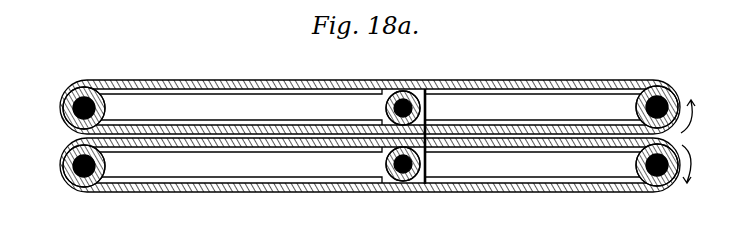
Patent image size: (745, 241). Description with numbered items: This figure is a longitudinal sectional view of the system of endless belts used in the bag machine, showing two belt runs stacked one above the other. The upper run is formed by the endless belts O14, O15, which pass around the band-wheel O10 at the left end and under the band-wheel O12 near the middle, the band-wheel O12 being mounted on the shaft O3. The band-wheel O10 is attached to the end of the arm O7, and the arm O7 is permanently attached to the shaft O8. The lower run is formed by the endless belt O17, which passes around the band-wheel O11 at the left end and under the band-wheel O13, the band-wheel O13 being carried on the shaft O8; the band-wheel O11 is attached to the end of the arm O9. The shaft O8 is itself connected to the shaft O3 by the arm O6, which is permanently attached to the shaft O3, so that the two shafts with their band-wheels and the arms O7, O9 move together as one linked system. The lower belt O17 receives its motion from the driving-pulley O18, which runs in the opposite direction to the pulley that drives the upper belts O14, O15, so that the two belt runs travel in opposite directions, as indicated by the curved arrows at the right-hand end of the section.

The shaft O3 is at (412, 183).
The arm O6 is at (428, 162).
The arm O7 is at (370, 107).
The shaft O8 is at (427, 107).
The arm O9 is at (370, 165).
The band-wheel O10 is at (63, 110).
The band-wheel O11 is at (66, 166).
The band-wheel O12 is at (405, 89).
The band-wheel O13 is at (393, 183).
The endless belt O14 is at (370, 97).
The endless belt O15 is at (672, 97).
The endless belt O17 is at (370, 176).
The driving-pulley O18 is at (672, 185).